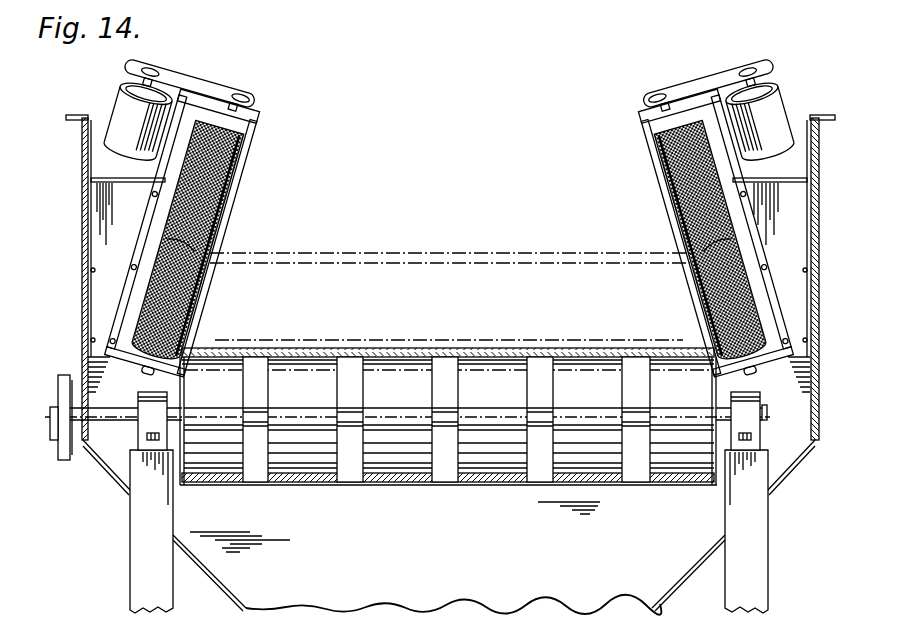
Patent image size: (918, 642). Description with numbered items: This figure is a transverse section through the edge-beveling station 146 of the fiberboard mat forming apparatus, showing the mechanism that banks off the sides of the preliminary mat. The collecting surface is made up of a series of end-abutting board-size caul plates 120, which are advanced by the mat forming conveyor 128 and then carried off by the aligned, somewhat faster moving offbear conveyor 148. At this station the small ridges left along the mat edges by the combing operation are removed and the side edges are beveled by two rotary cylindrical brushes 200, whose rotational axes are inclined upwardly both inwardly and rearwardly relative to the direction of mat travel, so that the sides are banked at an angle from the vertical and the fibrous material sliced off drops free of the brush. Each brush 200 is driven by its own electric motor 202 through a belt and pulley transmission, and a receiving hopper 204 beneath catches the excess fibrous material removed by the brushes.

The caul plates 120 is at (372, 350).
The mat forming conveyor 128 is at (512, 484).
The edge-beveling station 146 is at (470, 641).
The offbear conveyor 148 is at (670, 462).
The rotary cylindrical brushes 200 is at (233, 194).
The electric motor 202 is at (110, 95).
The receiving hopper 204 is at (218, 590).